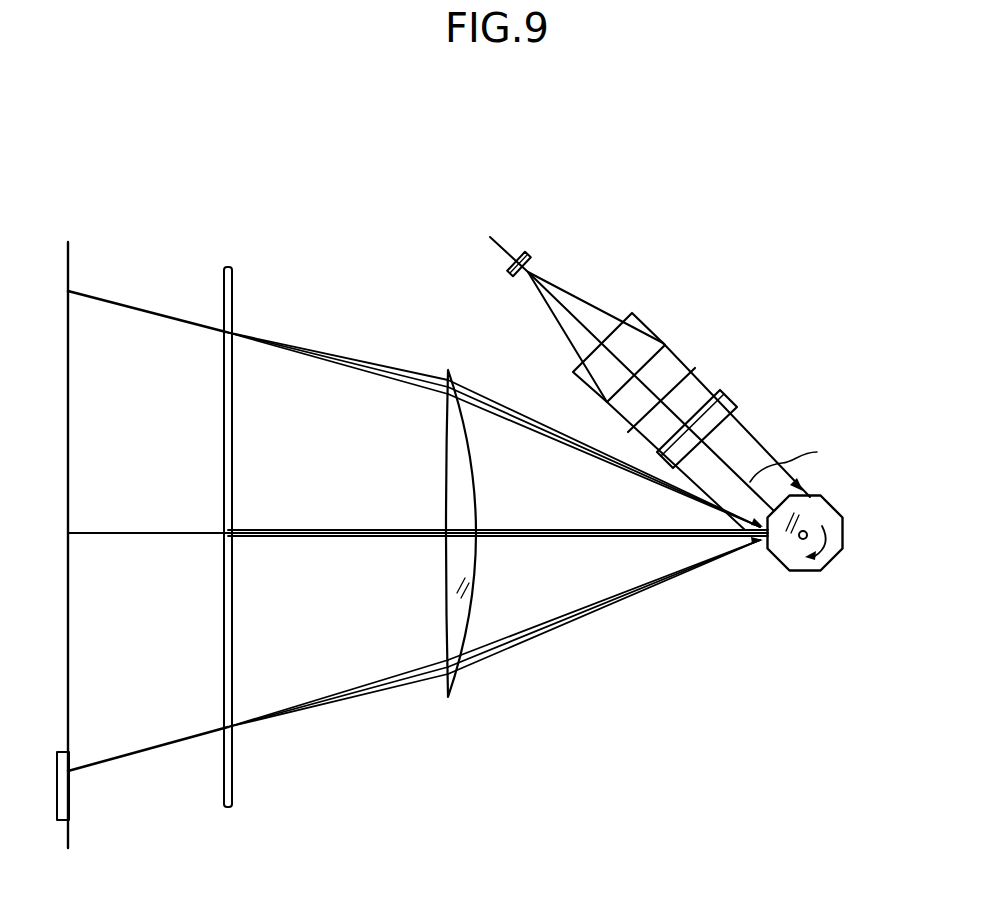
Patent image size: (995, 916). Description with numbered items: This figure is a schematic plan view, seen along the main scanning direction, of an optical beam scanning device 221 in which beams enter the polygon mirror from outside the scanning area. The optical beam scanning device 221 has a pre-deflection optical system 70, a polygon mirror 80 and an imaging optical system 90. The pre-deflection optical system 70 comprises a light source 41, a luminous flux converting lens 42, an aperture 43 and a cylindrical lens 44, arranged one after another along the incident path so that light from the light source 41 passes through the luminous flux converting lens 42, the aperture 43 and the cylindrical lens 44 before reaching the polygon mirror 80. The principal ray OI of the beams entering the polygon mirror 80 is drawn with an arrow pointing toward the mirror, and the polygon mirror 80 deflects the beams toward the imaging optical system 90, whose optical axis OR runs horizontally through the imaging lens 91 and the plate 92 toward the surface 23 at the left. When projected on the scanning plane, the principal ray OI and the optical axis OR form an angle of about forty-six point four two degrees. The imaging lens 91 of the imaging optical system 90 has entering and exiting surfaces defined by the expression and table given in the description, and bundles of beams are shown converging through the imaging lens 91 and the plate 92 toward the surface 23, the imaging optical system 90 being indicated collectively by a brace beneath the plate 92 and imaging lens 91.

The screen 23 is at (69, 836).
The optical beam scanning device 221 is at (415, 278).
The imaging optical system 90 is at (348, 573).
The imaging lens 91 is at (448, 610).
The transparent plate 92 is at (233, 675).
The optical axis of the imaging optical system OR is at (400, 530).
The pre-deflection optical system 70 is at (650, 347).
The light source 41 is at (527, 253).
The luminous flux converting lens 42 is at (648, 328).
The aperture 43 is at (690, 372).
The cylindrical lens 44 is at (715, 411).
The principal ray of beams entering the polygon mirror OI is at (798, 458).
The polygon mirror 80 is at (800, 572).